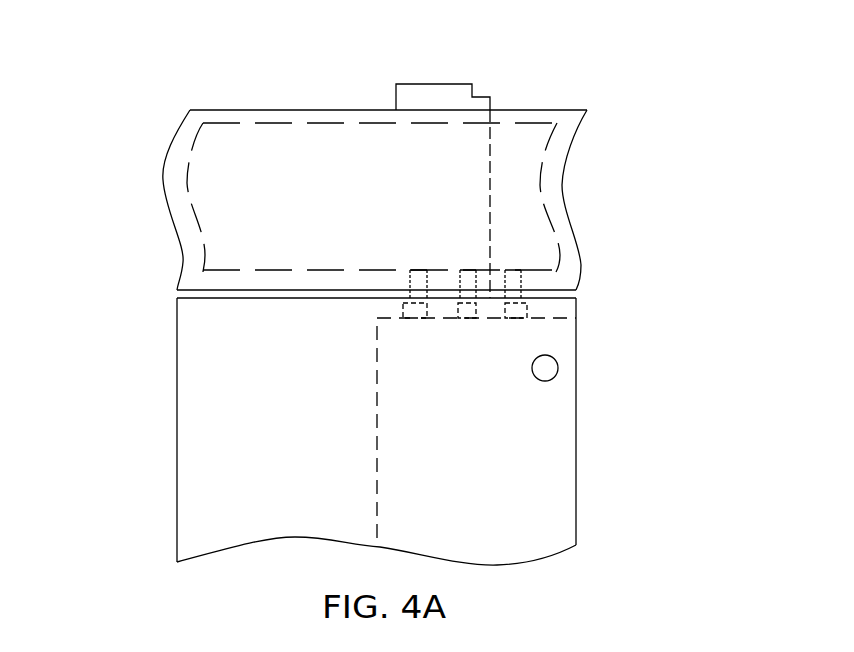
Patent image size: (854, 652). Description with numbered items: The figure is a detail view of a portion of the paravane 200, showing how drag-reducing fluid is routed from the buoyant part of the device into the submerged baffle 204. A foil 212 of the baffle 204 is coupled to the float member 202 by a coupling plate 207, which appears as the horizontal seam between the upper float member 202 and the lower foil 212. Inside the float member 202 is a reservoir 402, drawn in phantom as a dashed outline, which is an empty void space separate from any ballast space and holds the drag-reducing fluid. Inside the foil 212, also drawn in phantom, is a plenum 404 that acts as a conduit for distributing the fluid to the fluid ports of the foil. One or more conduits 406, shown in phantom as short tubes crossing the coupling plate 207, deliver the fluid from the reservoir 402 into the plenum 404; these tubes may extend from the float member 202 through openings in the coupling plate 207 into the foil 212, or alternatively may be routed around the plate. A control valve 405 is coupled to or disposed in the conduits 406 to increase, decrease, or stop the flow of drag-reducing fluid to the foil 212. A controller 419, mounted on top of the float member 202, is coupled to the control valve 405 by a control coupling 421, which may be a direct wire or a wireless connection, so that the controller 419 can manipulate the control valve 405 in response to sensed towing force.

The paravane 200 is at (520, 62).
The float member 202 is at (558, 110).
The baffle 204 is at (590, 282).
The coupling plate 207 is at (177, 292).
The foil 212 is at (576, 374).
The reservoir 402 is at (270, 120).
The plenum 404 is at (489, 415).
The control valve 405 is at (527, 310).
The conduits 406 is at (408, 282).
The controller 419 is at (436, 84).
The control coupling 421 is at (490, 174).